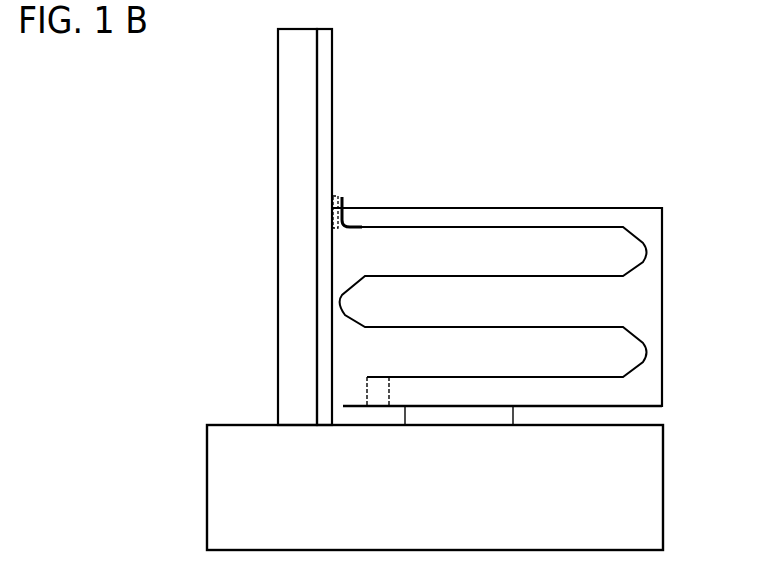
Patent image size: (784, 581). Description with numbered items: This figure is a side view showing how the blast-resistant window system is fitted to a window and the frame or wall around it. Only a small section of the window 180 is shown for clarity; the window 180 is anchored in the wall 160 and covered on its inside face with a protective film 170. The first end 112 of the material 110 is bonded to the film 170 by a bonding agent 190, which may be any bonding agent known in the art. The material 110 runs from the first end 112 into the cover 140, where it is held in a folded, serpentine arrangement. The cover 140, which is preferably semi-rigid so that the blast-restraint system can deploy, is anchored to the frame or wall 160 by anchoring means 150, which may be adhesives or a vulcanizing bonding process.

The material 110 is at (512, 227).
The first end 112 is at (350, 211).
The cover 140 is at (662, 292).
The anchoring means 150 is at (491, 437).
The wall 160 is at (663, 483).
The protective film 170 is at (332, 58).
The window 180 is at (278, 168).
The bonding agent 190 is at (338, 178).